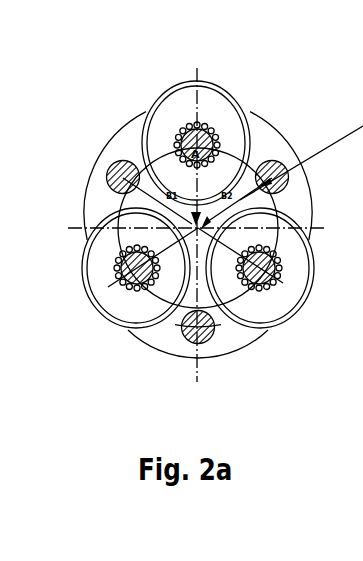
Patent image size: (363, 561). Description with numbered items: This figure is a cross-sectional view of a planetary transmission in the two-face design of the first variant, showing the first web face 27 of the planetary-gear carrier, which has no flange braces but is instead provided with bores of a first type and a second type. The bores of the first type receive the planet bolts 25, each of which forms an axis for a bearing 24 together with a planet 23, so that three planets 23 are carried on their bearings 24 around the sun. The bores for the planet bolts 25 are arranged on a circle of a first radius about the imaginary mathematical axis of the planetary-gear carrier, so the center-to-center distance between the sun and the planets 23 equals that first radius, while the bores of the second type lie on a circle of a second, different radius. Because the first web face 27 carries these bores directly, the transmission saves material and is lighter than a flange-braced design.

The planet 23 is at (115, 297).
The bearing 24 is at (276, 285).
The planet bolt 25 is at (118, 281).
The first web face 27 is at (124, 156).